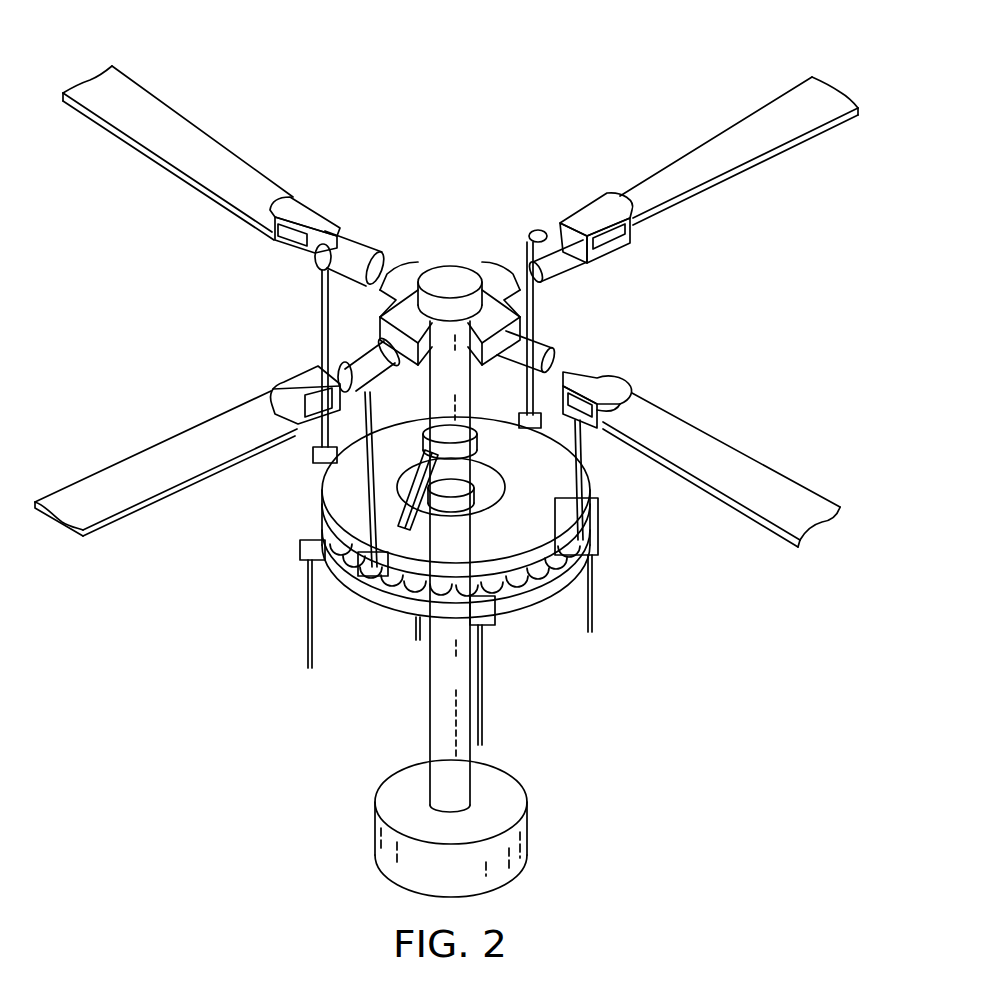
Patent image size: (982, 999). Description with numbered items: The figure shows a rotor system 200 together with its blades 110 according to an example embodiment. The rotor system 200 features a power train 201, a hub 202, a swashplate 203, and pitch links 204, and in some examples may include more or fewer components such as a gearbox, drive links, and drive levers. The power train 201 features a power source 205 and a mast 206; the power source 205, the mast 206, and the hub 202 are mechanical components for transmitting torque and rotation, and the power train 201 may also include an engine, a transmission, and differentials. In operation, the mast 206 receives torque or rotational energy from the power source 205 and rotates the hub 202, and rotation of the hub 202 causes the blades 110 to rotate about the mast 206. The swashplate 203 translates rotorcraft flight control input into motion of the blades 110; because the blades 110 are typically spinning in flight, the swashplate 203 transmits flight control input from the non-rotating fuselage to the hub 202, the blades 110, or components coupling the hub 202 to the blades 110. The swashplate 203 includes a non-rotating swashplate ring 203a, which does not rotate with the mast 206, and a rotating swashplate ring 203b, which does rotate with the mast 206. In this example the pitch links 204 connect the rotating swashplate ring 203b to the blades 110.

The rotor system 200 is at (505, 58).
The blades 110 is at (202, 141).
The hub 202 is at (407, 270).
The pitch links 204 is at (322, 322).
The swashplate 203 is at (447, 581).
The non-rotating swashplate ring 203a is at (520, 605).
The rotating swashplate ring 203b is at (333, 476).
The power train 201 is at (501, 609).
The mast 206 is at (428, 713).
The power source 205 is at (527, 833).